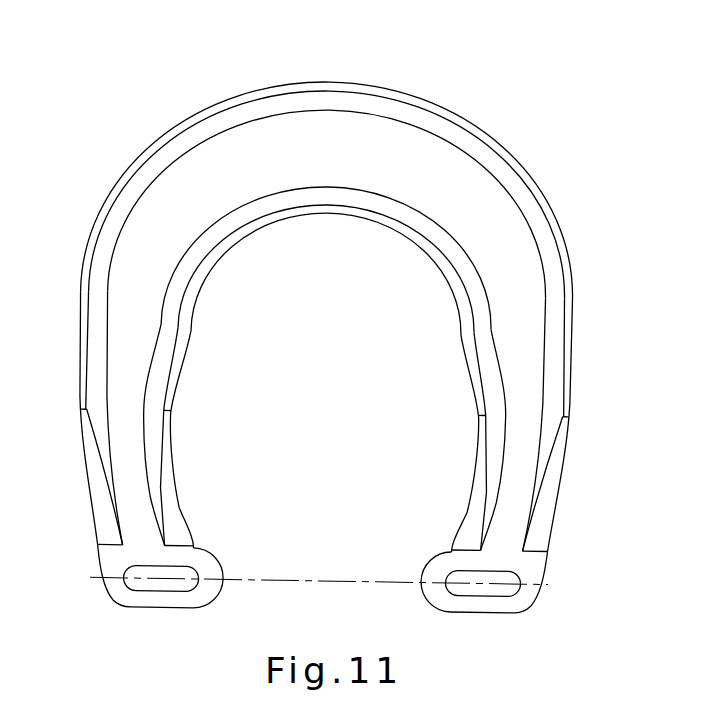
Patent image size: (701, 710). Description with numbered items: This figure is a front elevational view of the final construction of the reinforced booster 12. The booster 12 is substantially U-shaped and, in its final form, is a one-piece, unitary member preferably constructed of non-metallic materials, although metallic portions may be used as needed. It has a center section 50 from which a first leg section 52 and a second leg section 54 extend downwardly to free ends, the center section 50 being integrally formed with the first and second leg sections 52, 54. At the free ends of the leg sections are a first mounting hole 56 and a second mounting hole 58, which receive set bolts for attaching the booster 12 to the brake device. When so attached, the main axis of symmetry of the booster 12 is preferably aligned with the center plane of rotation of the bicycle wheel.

The booster 12 is at (510, 110).
The center section 50 is at (312, 127).
The first leg section 52 is at (118, 361).
The second leg section 54 is at (533, 379).
The first mounting hole 56 is at (136, 589).
The second mounting hole 58 is at (509, 585).